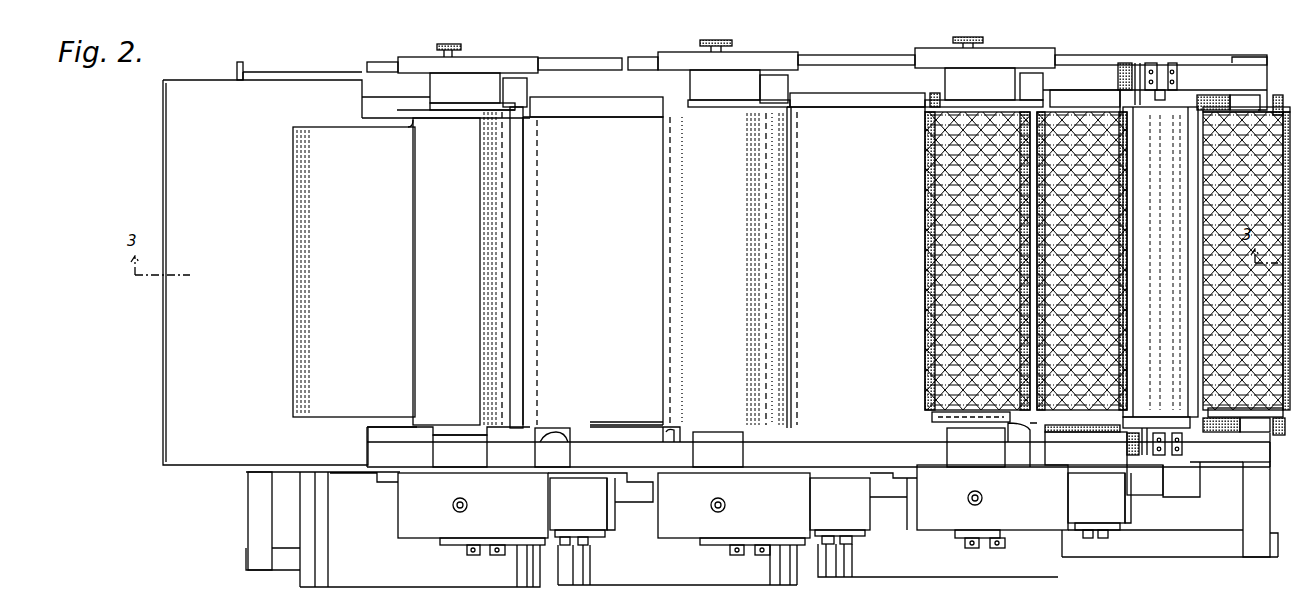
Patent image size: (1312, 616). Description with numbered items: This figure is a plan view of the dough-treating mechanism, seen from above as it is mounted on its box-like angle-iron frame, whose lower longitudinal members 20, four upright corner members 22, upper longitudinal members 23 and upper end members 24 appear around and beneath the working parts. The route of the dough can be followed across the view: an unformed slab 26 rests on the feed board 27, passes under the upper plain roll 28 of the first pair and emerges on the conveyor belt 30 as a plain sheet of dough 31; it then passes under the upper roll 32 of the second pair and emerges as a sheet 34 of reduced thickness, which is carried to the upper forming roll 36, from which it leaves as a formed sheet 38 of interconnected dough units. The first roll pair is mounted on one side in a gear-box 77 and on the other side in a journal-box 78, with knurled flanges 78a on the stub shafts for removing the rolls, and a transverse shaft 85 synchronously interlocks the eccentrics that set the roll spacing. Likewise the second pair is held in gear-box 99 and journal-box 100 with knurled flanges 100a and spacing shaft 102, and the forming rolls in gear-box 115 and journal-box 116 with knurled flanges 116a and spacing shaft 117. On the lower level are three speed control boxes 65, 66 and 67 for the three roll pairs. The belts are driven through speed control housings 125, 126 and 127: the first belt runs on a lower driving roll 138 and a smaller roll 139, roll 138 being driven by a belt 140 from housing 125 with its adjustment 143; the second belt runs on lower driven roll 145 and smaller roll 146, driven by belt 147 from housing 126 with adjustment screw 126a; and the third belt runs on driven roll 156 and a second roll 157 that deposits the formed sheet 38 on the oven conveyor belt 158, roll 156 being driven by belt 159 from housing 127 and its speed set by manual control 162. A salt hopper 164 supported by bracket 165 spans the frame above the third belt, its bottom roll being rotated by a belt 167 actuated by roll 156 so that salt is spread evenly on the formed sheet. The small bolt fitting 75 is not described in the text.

The lower longitudinal member 20 is at (1186, 563).
The upright member 22 is at (241, 70).
The upper longitudinal member 23 is at (326, 72).
The upper end member 24 is at (248, 500).
The unformed slab 26 is at (354, 268).
The feed board 27 is at (290, 272).
The upper plain roll 28 is at (446, 271).
The conveyor belt 30 is at (604, 406).
The plain sheet of dough 31 is at (593, 261).
The upper plain roll of second pair 32 is at (732, 269).
The sheet of reduced thickness 34 is at (856, 198).
The upper forming roll 36 is at (918, 359).
The formed sheet 38 is at (1082, 140).
The speed control box 65 is at (380, 583).
The speed control box 66 is at (700, 577).
The speed control box 67 is at (942, 573).
The bolt bracket 75 is at (483, 552).
The gear-box 77 is at (410, 517).
The journal-box 78 is at (492, 57).
The knurled flange 78a is at (455, 44).
The transverse shaft 85 is at (522, 212).
The gear-box 99 is at (668, 538).
The journal-box 100 is at (752, 58).
The knurled flange 100a is at (730, 40).
The shaft 102 is at (783, 212).
The gear-box 115 is at (935, 518).
The journal-box 116 is at (1005, 55).
The knurled flange 116a is at (975, 37).
The shaft 117 is at (1038, 132).
The speed control housing 125 is at (578, 507).
The speed control housing 126 is at (840, 507).
The adjustment screw 126a is at (845, 545).
The speed control housing 127 is at (1096, 501).
The lower driving roll 138 is at (540, 350).
The smaller roll 139 is at (668, 345).
The belt 140 is at (576, 440).
The adjustment 143 is at (584, 546).
The lower driven roll 145 is at (798, 328).
The second smaller roll 146 is at (932, 432).
The belt 147 is at (818, 430).
The driven roll 156 is at (1080, 130).
The second roll 157 is at (1242, 100).
The oven conveyor belt 158 is at (1228, 430).
The belt 159 is at (1022, 440).
The manual control 162 is at (1106, 538).
The salt hopper 164 is at (1160, 107).
The bracket 165 is at (1145, 63).
The belt 167 is at (1086, 432).